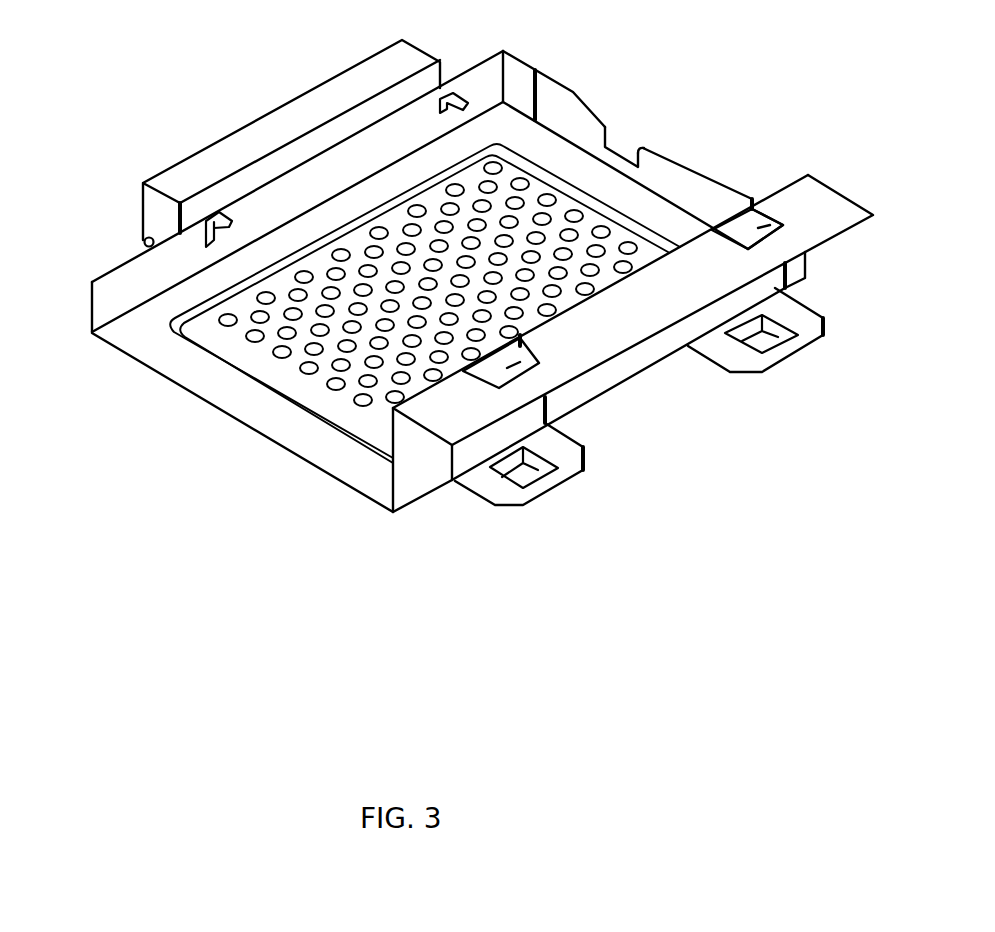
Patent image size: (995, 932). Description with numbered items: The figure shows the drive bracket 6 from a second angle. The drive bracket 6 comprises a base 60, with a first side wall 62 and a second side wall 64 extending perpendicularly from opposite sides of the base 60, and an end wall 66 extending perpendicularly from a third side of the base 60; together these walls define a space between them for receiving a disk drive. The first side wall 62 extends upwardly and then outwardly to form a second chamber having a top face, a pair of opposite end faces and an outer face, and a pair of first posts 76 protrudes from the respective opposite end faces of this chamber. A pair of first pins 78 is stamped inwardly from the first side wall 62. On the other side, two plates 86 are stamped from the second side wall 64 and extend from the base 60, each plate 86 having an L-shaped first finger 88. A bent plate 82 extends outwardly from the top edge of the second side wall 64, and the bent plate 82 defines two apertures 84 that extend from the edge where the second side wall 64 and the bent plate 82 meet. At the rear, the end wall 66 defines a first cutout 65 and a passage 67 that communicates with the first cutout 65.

The drive bracket 6 is at (532, 37).
The base 60 is at (307, 397).
The first side wall 62 is at (107, 297).
The second side wall 64 is at (417, 460).
The first cutout 65 is at (612, 142).
The end wall 66 is at (707, 190).
The passage 67 is at (643, 145).
The first posts 76 is at (144, 243).
The first pins 78 is at (222, 217).
The bent plate 82 is at (612, 322).
The apertures 84 is at (783, 218).
The plates 86 is at (570, 457).
The first finger 88 is at (560, 477).